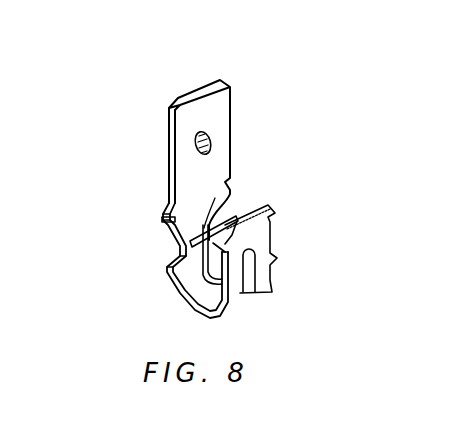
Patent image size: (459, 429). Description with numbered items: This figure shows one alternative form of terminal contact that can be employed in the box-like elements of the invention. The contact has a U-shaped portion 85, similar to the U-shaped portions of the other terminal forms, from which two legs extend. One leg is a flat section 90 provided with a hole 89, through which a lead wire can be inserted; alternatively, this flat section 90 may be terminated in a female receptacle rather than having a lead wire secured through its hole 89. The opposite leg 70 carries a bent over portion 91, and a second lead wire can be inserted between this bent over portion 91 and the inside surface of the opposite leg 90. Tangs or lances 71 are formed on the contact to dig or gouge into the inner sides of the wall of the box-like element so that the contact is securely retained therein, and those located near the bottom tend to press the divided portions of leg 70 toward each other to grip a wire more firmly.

The flat section 90 is at (183, 126).
The hole 89 is at (194, 146).
The tangs or lances 71 is at (162, 222).
The bent over portion 91 is at (213, 232).
The leg 70 is at (262, 237).
The U-shaped portion 85 is at (289, 265).